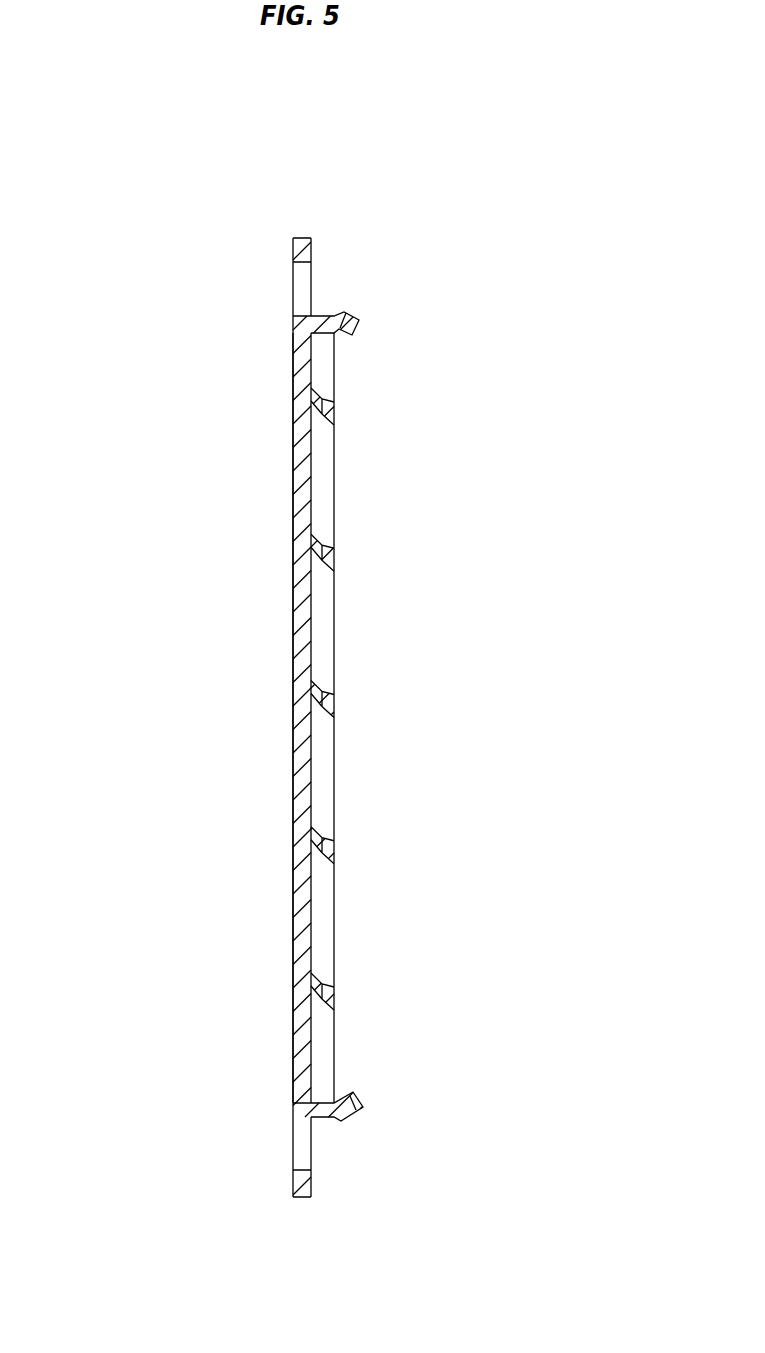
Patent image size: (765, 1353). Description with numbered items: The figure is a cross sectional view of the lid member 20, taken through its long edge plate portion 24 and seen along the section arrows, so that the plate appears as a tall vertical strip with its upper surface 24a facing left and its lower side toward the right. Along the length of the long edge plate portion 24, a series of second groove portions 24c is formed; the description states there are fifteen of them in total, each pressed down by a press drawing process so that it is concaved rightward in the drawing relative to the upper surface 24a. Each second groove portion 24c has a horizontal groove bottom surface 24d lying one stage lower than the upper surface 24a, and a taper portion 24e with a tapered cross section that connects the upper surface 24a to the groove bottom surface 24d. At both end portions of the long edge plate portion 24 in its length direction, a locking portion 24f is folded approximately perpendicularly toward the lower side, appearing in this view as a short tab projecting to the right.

The lid member 20 is at (243, 190).
The long edge plate portion 24 is at (293, 483).
The upper surface 24a is at (293, 648).
The second groove portion 24c is at (293, 712).
The groove bottom surface 24d is at (293, 1003).
The taper portion 24e is at (295, 1020).
The locking portion 24f is at (327, 1119).